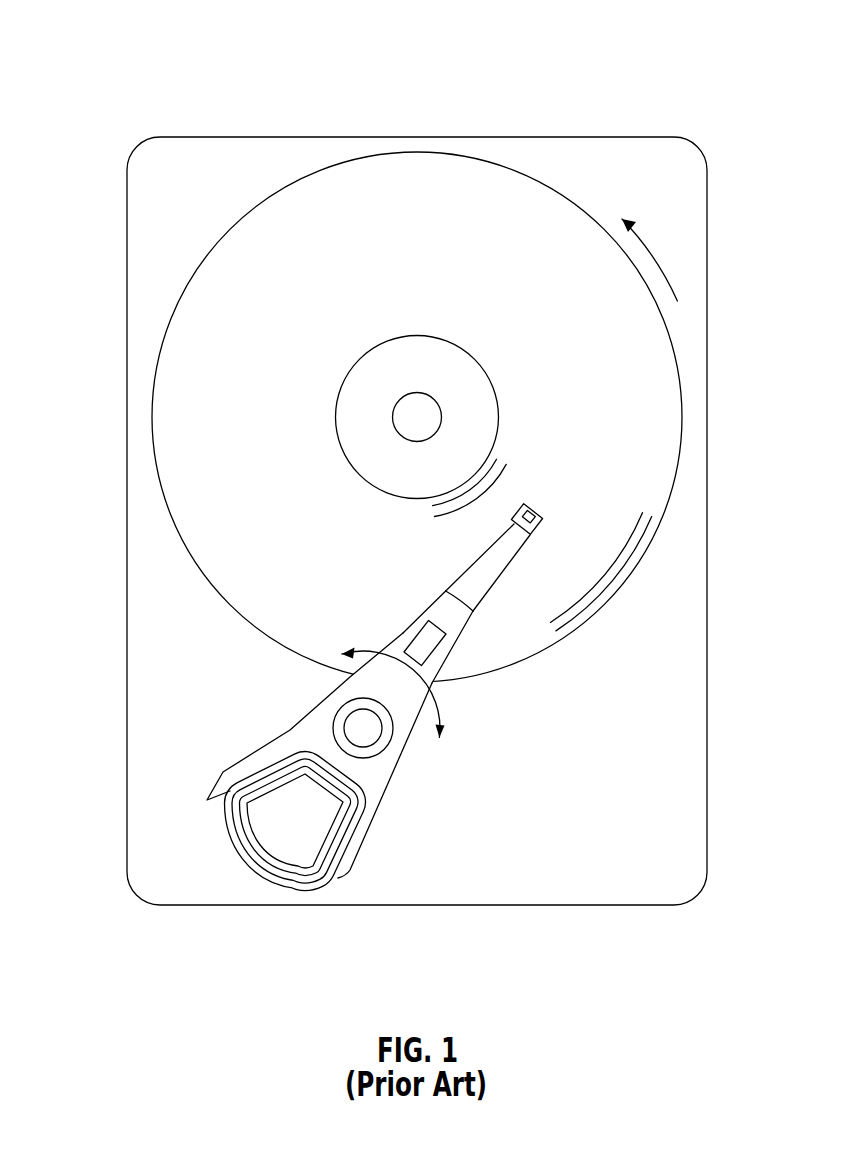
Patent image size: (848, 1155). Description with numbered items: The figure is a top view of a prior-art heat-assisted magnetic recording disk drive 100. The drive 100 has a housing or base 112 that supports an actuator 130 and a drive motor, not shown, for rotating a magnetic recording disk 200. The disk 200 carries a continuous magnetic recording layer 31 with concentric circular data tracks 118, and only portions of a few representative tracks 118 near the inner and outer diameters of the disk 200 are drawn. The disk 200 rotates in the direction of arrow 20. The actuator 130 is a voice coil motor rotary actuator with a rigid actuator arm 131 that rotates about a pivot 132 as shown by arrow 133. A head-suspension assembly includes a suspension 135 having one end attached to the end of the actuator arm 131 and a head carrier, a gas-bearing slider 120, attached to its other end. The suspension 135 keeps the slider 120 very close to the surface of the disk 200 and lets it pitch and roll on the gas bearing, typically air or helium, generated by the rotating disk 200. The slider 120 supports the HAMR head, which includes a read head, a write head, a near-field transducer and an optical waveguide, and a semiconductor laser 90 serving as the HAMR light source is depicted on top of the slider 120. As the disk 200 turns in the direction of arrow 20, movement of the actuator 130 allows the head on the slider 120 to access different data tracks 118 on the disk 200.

The HAMR disk drive 100 is at (120, 48).
The housing or base 112 is at (637, 137).
The disk 200 is at (278, 192).
The arrow 20 is at (650, 242).
The continuous magnetic recording layer 31 is at (658, 380).
The data tracks 118 is at (421, 500).
The semiconductor laser 90 is at (541, 516).
The gas-bearing slider 120 is at (540, 528).
The suspension 135 is at (460, 583).
The actuator arm 131 is at (403, 635).
The pivot 132 is at (357, 725).
The arrow 133 is at (438, 708).
The actuator 130 is at (215, 783).